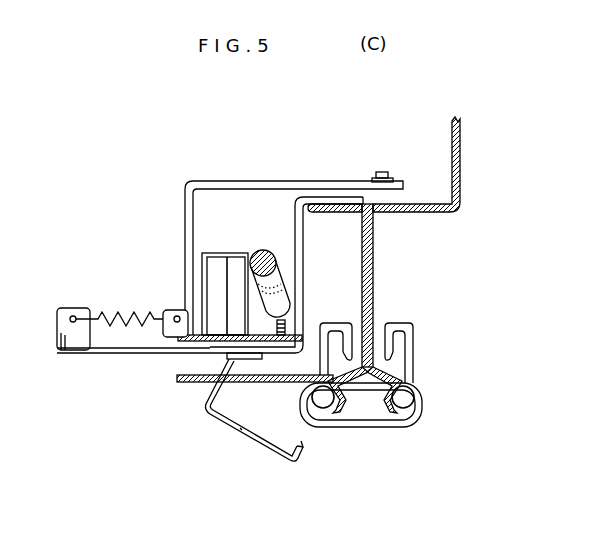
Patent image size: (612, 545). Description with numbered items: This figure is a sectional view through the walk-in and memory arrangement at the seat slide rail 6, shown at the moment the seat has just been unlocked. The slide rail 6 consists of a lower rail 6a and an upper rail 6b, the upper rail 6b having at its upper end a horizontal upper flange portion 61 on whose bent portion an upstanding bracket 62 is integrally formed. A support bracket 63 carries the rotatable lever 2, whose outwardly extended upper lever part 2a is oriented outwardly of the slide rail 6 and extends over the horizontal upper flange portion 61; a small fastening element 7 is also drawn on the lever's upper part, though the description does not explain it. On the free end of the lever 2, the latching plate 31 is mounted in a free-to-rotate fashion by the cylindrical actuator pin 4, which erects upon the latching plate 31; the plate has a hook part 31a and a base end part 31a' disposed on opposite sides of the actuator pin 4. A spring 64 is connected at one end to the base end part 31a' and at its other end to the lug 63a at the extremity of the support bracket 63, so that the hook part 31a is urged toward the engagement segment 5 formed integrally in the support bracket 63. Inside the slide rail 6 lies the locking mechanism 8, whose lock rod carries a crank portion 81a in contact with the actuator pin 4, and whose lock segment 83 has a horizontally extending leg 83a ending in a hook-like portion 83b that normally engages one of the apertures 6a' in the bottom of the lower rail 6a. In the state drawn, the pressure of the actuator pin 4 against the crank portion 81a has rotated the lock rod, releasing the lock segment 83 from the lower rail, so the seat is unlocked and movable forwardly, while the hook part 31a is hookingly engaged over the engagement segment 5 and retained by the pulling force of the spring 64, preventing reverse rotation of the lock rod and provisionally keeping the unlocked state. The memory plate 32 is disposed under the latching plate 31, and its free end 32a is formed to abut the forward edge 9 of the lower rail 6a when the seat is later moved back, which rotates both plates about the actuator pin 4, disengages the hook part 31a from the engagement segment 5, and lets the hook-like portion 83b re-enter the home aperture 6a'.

The rotatable lever 2 is at (294, 239).
The upper lever part 2a is at (250, 360).
The actuator pin 4 is at (206, 272).
The engagement segment 5 is at (397, 242).
The slide rail 6 is at (391, 395).
The lower rail 6a is at (413, 384).
The aperture 6a' is at (362, 428).
The upper rail 6b is at (405, 383).
The bolt 7 is at (374, 179).
The locking mechanism 8 is at (221, 244).
The forward edge of the lower rail 9 is at (412, 341).
The latching plate 31 is at (178, 341).
The hook part 31a is at (321, 279).
The base end part 31a' is at (164, 305).
The memory plate 32 is at (193, 382).
The free end of the memory plate 32a is at (297, 393).
The horizontal upper flange portion 61 is at (340, 213).
The upstanding bracket 62 is at (461, 151).
The support bracket 63 is at (102, 353).
The lug 63a is at (65, 310).
The spring 64 is at (108, 313).
The crank portion 81a is at (254, 250).
The lock segment 83 is at (252, 426).
The horizontally extending leg 83a is at (241, 431).
The hook-like portion 83b is at (303, 451).